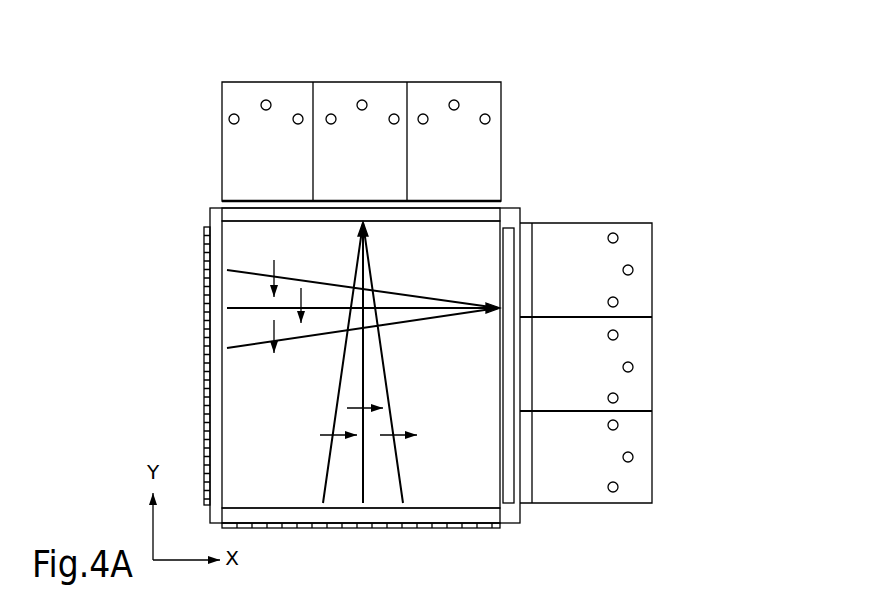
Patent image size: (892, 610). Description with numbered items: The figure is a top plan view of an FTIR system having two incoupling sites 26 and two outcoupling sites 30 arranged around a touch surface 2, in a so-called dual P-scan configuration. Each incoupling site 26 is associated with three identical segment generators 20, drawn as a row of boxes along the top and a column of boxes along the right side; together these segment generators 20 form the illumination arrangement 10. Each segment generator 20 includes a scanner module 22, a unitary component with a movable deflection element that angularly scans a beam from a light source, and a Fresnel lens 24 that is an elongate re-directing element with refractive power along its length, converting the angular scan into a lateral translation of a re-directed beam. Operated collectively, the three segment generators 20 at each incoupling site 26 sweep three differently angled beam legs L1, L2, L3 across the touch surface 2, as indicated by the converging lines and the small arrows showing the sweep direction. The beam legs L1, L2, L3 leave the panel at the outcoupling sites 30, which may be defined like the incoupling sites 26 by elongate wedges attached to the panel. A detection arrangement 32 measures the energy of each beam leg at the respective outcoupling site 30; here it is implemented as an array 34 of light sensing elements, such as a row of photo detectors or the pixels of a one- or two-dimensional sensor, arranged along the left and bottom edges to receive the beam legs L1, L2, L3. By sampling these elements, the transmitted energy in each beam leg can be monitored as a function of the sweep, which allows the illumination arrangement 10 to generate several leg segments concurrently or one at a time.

The touch surface 2 is at (480, 493).
The illumination arrangement 10 is at (638, 180).
The segment generator 20 is at (238, 78).
The scanner module 22 is at (429, 121).
The Fresnel lens 24 is at (263, 207).
The incoupling site 26 is at (492, 217).
The outcoupling site 30 is at (217, 234).
The detection arrangement 32 is at (192, 433).
The array of light sensing elements 34 is at (207, 357).
The beam leg L1 is at (245, 308).
The beam leg L2 is at (320, 285).
The beam leg L3 is at (317, 340).